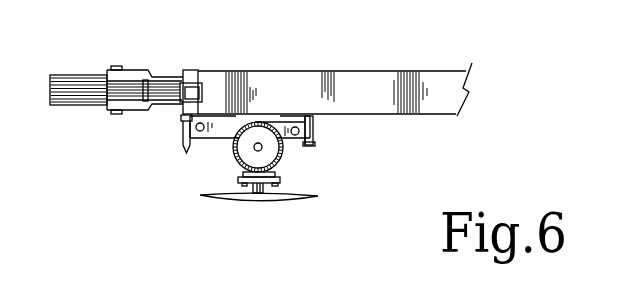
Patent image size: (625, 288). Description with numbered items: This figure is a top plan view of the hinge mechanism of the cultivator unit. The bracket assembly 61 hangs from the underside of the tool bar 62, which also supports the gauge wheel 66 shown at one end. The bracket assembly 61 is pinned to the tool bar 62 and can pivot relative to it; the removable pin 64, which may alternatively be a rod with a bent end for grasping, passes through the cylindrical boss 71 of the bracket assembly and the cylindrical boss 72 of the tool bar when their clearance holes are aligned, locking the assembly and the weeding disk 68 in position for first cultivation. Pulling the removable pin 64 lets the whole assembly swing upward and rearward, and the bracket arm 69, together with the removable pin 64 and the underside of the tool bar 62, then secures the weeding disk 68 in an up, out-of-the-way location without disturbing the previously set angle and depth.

The bracket assembly 61 is at (313, 133).
The tool bar 62 is at (357, 71).
The removable pin 64 is at (187, 153).
The gauge wheel 66 is at (53, 76).
The weeding disk 68 is at (303, 201).
The bracket arm 69 is at (305, 113).
The cylindrical boss 71 is at (182, 139).
The cylindrical boss 72 is at (178, 121).